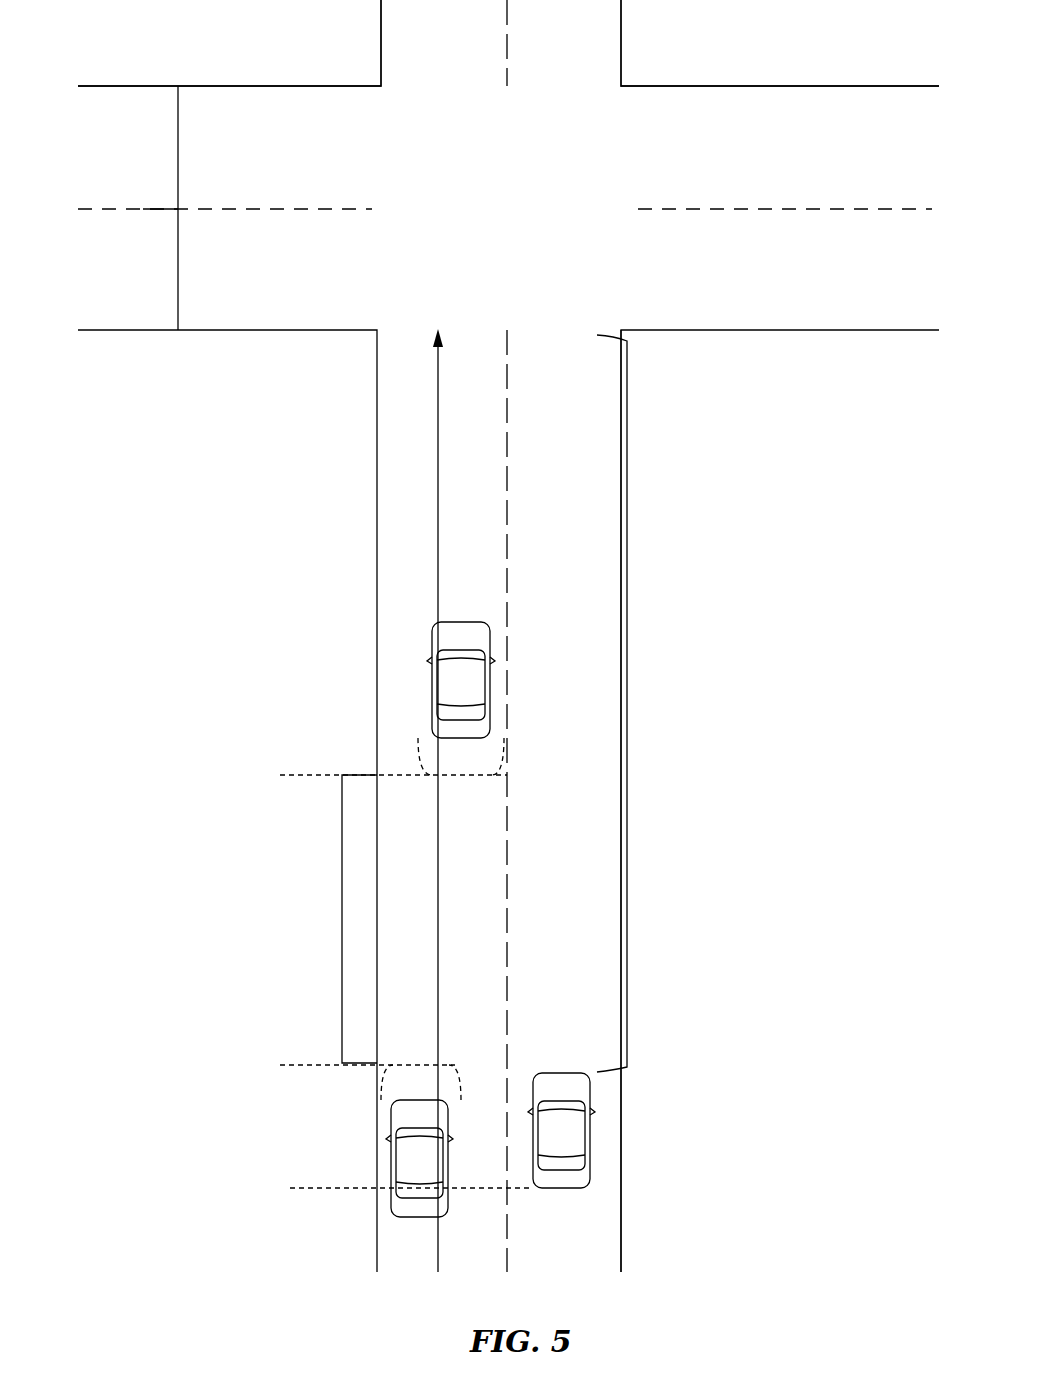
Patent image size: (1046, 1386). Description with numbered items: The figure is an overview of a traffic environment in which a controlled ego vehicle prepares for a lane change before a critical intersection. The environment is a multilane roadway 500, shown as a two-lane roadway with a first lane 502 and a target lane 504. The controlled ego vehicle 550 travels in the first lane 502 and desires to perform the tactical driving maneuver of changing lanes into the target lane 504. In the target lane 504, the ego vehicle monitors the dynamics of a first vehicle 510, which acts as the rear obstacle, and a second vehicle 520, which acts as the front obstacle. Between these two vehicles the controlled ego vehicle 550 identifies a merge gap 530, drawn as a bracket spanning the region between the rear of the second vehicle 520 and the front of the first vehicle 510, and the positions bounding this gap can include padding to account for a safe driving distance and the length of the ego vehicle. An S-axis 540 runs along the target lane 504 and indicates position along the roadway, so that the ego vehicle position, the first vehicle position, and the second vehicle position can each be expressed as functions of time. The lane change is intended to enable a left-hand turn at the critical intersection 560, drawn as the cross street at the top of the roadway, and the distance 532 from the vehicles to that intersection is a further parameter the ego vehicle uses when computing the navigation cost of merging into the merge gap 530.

The multilane roadway 500 is at (122, 426).
The first lane 502 is at (575, 1262).
The target lane 504 is at (475, 1262).
The first vehicle 510 is at (434, 1172).
The second vehicle 520 is at (475, 694).
The merge gap 530 is at (342, 920).
The distance to the critical intersection 532 is at (627, 704).
The S-axis 540 is at (428, 366).
The controlled ego vehicle 550 is at (575, 1145).
The critical intersection 560 is at (143, 209).